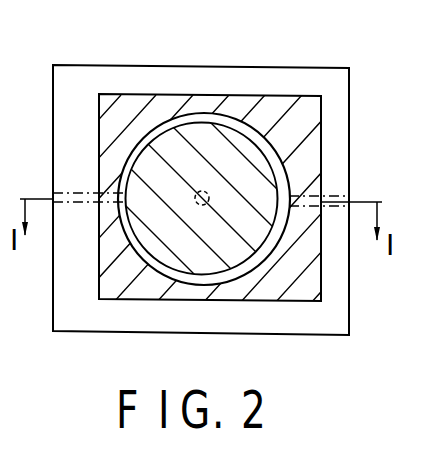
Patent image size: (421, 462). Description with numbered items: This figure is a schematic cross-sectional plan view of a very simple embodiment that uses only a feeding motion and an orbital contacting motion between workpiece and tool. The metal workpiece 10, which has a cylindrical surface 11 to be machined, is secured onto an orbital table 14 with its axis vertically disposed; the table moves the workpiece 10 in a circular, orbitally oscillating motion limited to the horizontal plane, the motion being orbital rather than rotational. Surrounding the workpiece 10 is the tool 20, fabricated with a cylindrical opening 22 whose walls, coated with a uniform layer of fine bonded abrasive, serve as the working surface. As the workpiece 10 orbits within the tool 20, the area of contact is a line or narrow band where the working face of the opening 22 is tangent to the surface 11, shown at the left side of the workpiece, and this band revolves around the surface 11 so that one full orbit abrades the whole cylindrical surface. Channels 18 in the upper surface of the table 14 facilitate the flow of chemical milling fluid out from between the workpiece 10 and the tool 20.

The workpiece 10 is at (239, 167).
The cylindrical surface 11 is at (163, 273).
The orbital table 14 is at (63, 116).
The channels 18 is at (75, 192).
The tool 20 is at (145, 120).
The cylindrical opening 22 is at (214, 113).